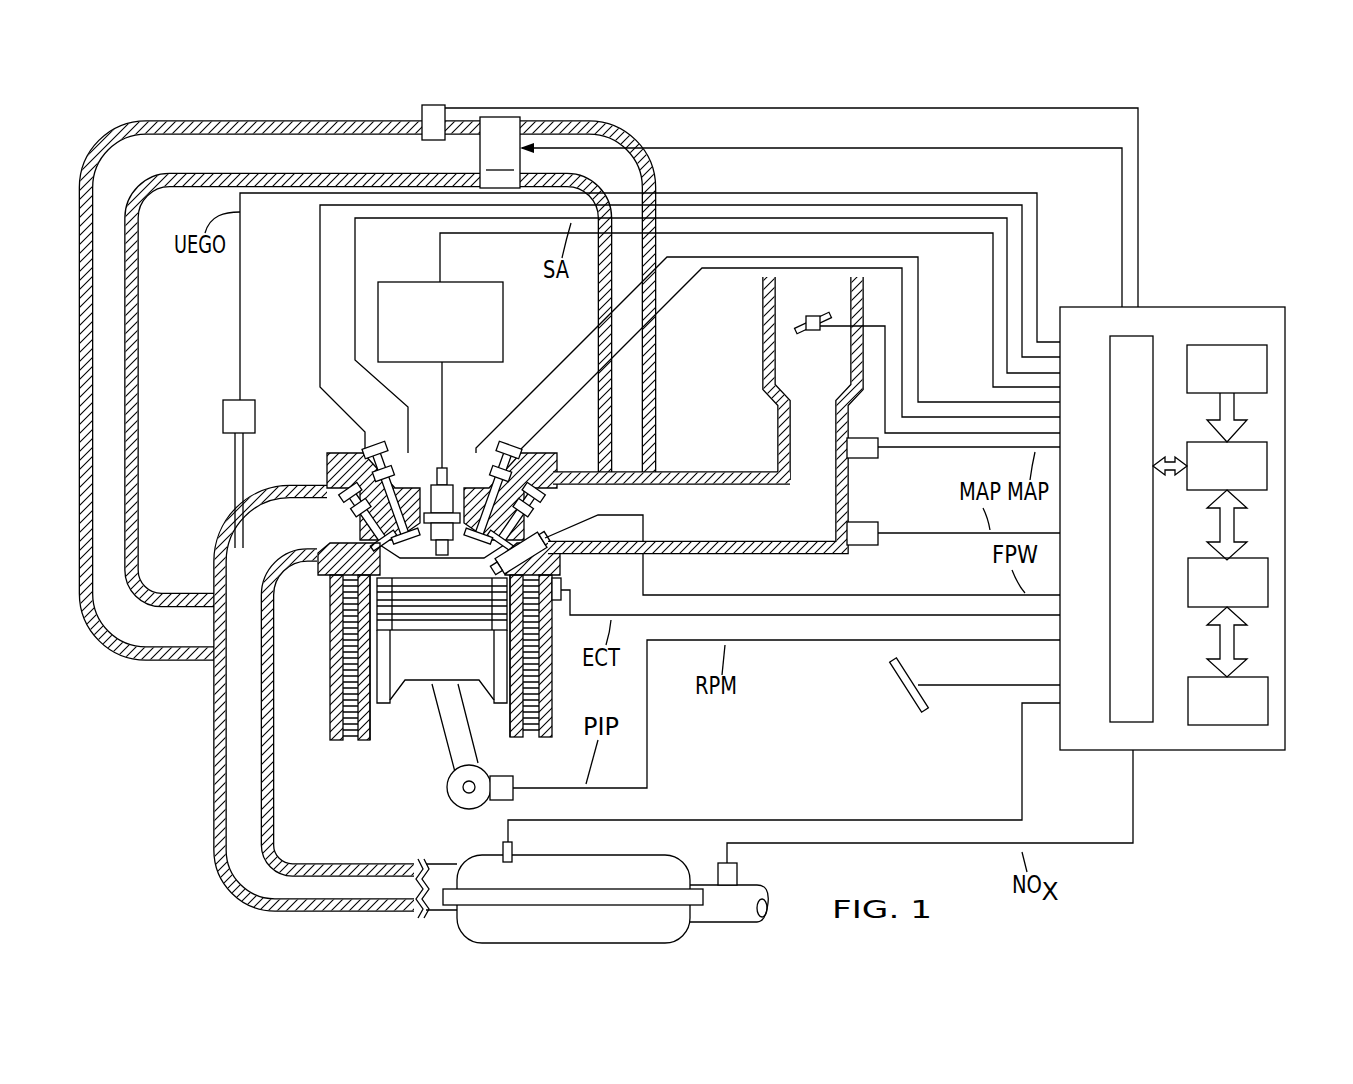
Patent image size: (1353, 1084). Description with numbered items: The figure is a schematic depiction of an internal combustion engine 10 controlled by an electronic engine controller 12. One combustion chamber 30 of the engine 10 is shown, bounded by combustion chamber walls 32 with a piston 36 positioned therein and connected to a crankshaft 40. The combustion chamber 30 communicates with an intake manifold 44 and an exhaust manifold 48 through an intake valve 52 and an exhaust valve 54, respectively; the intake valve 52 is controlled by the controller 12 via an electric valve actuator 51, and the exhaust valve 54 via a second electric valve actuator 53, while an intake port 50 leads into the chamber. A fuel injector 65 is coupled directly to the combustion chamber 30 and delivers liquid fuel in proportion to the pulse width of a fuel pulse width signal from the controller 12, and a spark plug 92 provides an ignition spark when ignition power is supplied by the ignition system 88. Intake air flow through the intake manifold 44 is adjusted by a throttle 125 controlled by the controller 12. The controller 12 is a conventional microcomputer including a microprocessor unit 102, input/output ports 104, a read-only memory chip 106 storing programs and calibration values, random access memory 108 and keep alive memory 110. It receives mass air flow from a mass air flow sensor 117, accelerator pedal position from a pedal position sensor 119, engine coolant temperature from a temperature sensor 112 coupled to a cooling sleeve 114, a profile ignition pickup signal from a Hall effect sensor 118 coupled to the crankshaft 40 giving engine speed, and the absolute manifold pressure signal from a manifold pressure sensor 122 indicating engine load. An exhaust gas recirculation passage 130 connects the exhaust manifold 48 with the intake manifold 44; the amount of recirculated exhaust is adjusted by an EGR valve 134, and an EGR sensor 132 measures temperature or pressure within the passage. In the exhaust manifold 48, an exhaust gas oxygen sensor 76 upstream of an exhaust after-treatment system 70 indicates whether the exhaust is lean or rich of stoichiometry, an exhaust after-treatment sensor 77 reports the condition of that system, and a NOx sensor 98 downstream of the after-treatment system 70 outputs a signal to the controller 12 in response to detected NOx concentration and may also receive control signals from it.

The internal combustion engine 10 is at (335, 448).
The electronic engine controller 12 is at (1197, 498).
The combustion chamber 30 is at (413, 580).
The combustion chamber walls 32 is at (372, 738).
The piston 36 is at (445, 678).
The crankshaft 40 is at (452, 796).
The intake manifold 44 is at (733, 530).
The exhaust manifold 48 is at (240, 560).
The intake port 50 is at (398, 436).
The electric valve actuator 51 is at (453, 458).
The intake valve 52 is at (495, 515).
The electric valve actuator 53 is at (376, 450).
The exhaust valve 54 is at (383, 527).
The fuel injector 65 is at (550, 545).
The exhaust after-treatment system 70 is at (620, 855).
The exhaust gas oxygen sensor 76 is at (228, 399).
The exhaust after-treatment sensor 77 is at (500, 850).
The ignition system 88 is at (455, 280).
The spark plug 92 is at (436, 460).
The NOx sensor 98 is at (744, 867).
The microprocessor unit 102 is at (1268, 470).
The input/output ports 104 is at (1155, 348).
The read-only memory chip 106 is at (1268, 370).
The random access memory 108 is at (1268, 585).
The keep alive memory 110 is at (1268, 705).
The temperature sensor 112 is at (565, 585).
The cooling sleeve 114 is at (349, 744).
The mass air flow sensor 117 is at (888, 456).
The Hall effect sensor 118 is at (515, 784).
The pedal position sensor 119 is at (893, 698).
The manifold pressure sensor 122 is at (862, 548).
The throttle 125 is at (793, 309).
The exhaust gas recirculation passage 130 is at (250, 150).
The EGR sensor 132 is at (423, 142).
The EGR valve 134 is at (801, 226).